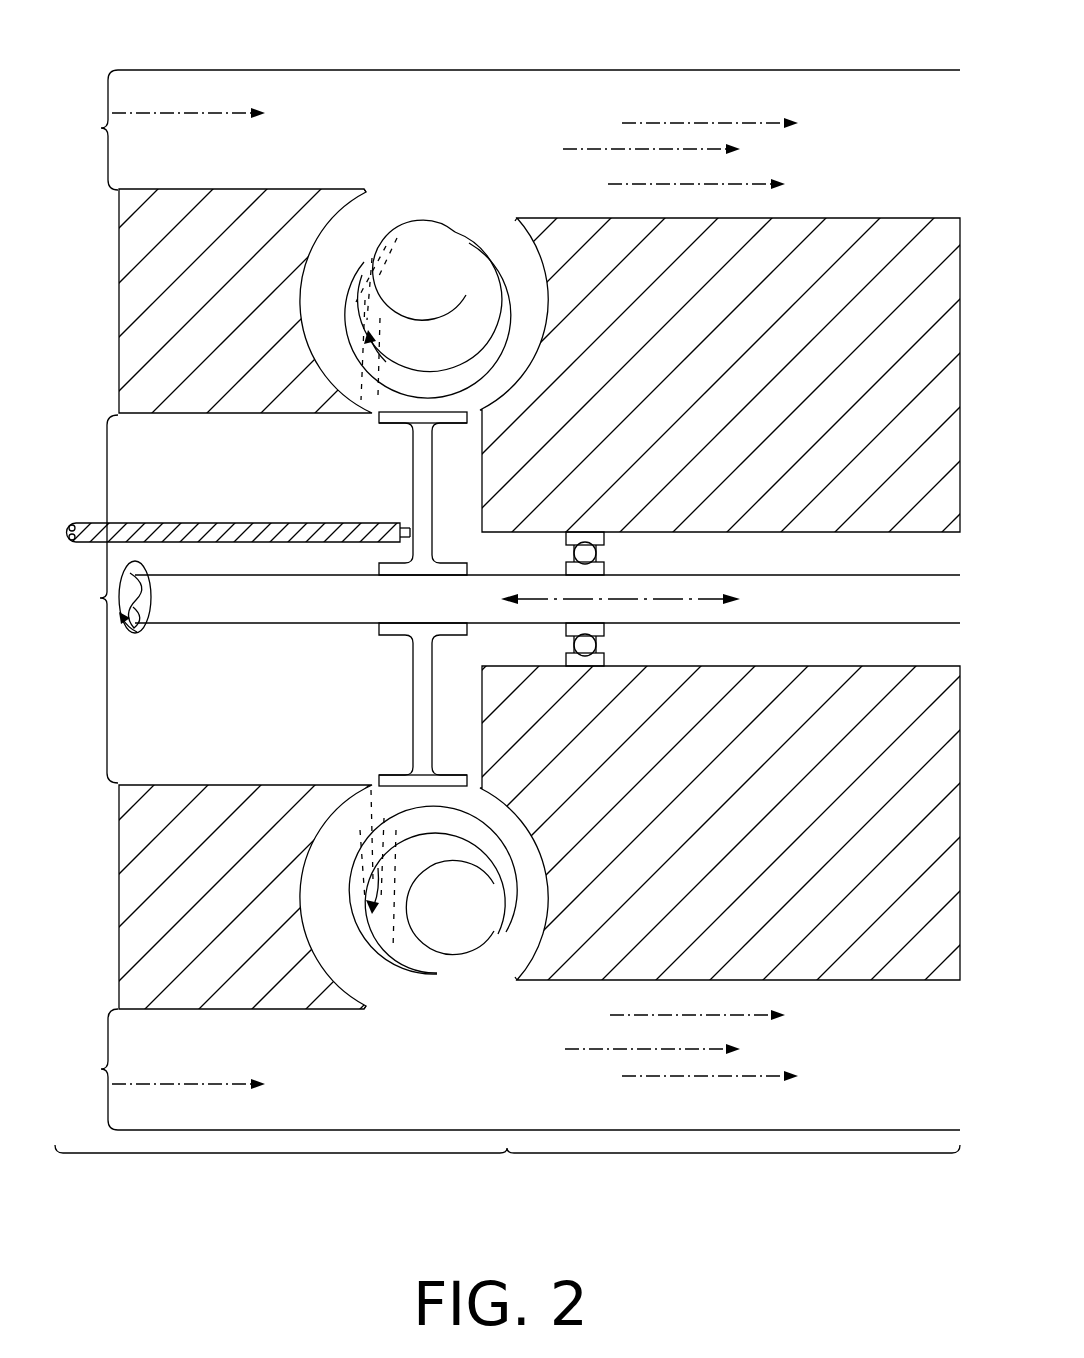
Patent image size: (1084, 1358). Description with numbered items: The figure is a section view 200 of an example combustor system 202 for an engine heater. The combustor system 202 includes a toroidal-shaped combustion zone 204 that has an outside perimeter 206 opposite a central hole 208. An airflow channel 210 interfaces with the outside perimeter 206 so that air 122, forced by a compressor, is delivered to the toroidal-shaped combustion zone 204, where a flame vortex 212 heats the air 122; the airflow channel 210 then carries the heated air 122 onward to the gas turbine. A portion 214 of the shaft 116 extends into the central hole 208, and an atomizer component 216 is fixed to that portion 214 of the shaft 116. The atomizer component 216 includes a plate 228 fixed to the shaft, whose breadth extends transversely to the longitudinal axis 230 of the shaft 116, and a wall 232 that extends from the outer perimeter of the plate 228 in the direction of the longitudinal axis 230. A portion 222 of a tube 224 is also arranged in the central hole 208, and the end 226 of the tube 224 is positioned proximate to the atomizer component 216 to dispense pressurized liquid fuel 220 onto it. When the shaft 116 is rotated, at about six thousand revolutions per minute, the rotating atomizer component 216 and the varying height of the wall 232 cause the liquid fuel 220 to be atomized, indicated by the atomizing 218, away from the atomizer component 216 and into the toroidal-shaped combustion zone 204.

The section view 200 is at (120, 26).
The airflow channel 210 is at (101, 128).
The air 122 is at (232, 114).
The outside perimeter 206 is at (364, 190).
The toroidal-shaped combustion zone 204 is at (427, 268).
The flame vortex 212 is at (457, 233).
The wall 232 is at (425, 412).
The plate 228 is at (432, 525).
The portion of the shaft 214 is at (440, 609).
The central hole 208 is at (100, 598).
The tube 224 is at (239, 523).
The liquid fuel 220 is at (402, 523).
The portion of the tube 222 is at (346, 542).
The end of the tube 226 is at (388, 551).
The atomizing 218 is at (372, 426).
The atomizer component 216 is at (392, 487).
The shaft 116 is at (355, 645).
The longitudinal axis 230 is at (662, 598).
The combustor system 202 is at (542, 666).